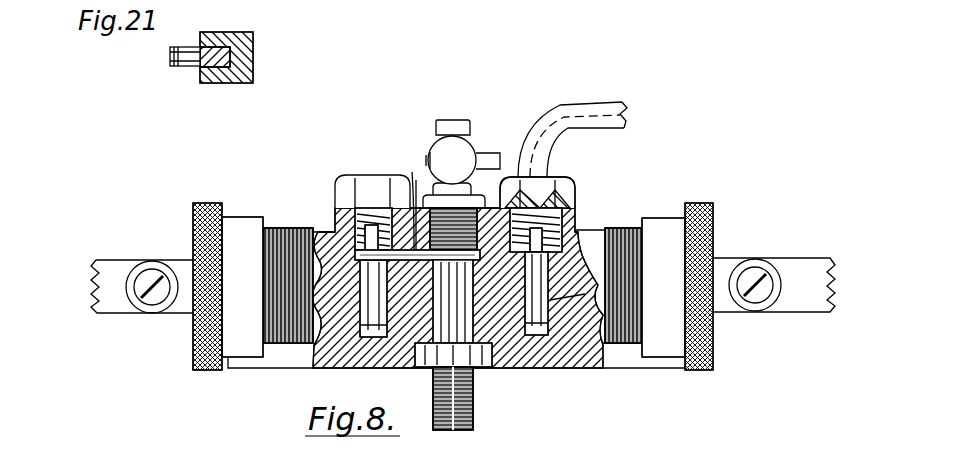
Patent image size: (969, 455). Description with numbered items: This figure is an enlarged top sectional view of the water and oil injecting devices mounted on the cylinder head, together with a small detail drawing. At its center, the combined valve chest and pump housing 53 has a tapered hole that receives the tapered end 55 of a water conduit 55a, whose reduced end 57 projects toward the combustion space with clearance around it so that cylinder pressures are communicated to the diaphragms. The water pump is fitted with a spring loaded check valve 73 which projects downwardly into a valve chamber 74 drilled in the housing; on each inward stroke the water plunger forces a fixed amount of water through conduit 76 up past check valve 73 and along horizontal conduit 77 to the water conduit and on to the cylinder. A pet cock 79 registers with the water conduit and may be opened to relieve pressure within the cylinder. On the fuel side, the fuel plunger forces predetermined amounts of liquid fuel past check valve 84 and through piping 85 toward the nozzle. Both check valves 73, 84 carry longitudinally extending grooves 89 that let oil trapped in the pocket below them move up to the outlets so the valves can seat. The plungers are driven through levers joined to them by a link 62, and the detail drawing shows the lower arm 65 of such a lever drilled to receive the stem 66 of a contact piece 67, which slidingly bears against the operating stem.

In FIG. 8, the combined valve chest and pump housing 53 is at (597, 366).
In FIG. 8, the tapered end 55 is at (453, 298).
In FIG. 8, the water conduit 55a is at (460, 426).
In FIG. 8, the reduced end 57 is at (467, 300).
In FIG. 8, the link 62 is at (123, 270).
In FIG. 21, the lower arm 65 is at (253, 76).
In FIG. 21, the stem 66 is at (203, 83).
In FIG. 21, the contact piece 67 is at (170, 62).
In FIG. 8, the check valve 73 is at (330, 244).
In FIG. 8, the valve chamber 74 is at (375, 337).
In FIG. 8, the conduit 76 is at (315, 370).
In FIG. 8, the horizontal conduit 77 is at (401, 202).
In FIG. 8, the pet cock 79 is at (462, 152).
In FIG. 8, the check valve 84 is at (575, 236).
In FIG. 8, the piping 85 is at (606, 106).
In FIG. 8, the grooves 89 is at (585, 294).